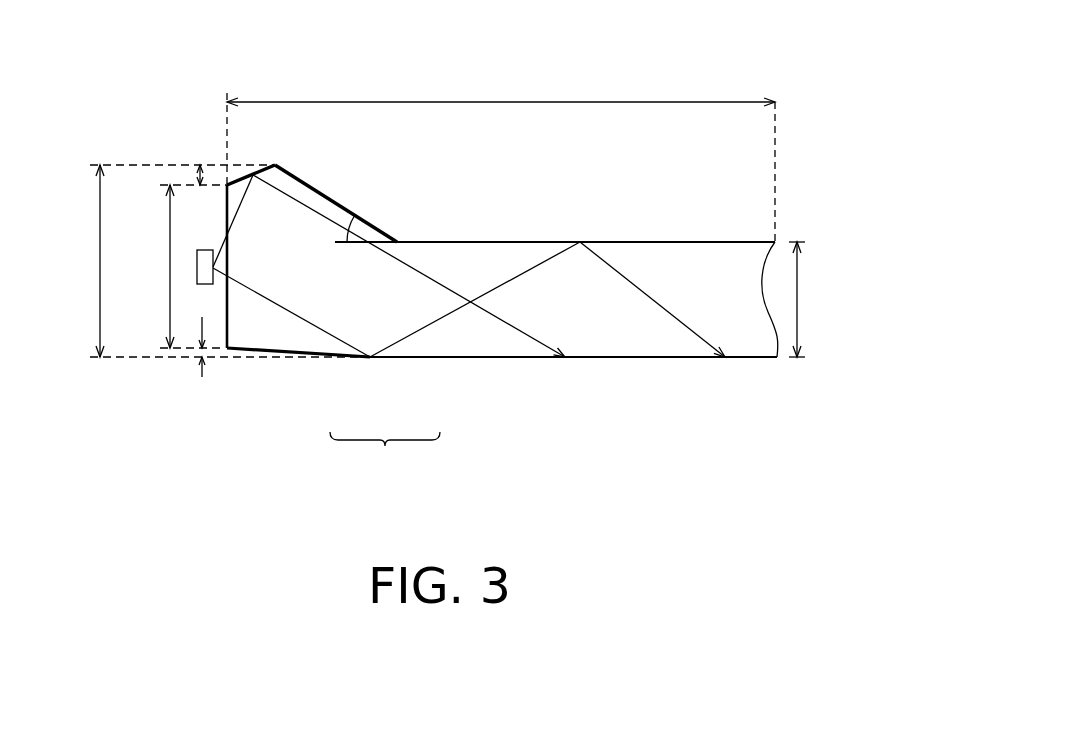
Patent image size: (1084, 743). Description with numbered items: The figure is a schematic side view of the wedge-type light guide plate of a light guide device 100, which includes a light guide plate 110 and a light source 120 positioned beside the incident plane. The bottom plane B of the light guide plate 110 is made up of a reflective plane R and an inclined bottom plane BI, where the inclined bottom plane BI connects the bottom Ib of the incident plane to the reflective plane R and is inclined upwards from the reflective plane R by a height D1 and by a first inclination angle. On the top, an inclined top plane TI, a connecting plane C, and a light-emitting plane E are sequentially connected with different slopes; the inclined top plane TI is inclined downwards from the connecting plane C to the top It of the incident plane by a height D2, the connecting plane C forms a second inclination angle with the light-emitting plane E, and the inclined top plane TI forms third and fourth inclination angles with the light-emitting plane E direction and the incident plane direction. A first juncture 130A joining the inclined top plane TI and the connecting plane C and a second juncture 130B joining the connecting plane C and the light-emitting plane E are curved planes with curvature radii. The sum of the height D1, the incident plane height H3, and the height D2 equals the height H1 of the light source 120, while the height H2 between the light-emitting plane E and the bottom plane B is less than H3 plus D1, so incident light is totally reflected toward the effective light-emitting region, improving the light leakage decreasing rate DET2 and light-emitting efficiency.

The light guide device 100 is at (808, 443).
The light guide plate 110 is at (740, 306).
The light source 120 is at (201, 284).
The first juncture 130A is at (276, 165).
The second juncture 130B is at (398, 240).
The light-emitting plane E is at (635, 242).
The connecting plane C is at (334, 200).
The inclined top plane TI is at (252, 173).
The top of the incident plane It is at (226, 187).
The bottom of the incident plane Ib is at (225, 348).
The height of the light source H1 is at (84, 261).
The height between the light-emitting plane and the bottom plane H2 is at (848, 299).
The height of the incident plane H3 is at (153, 266).
The light leakage decreasing rate DET2 is at (501, 151).
The height by which the inclined bottom plane is inclined upwards D1 is at (202, 378).
The height by which the inclined top plane is inclined downwards D2 is at (197, 175).
The inclined bottom plane BI is at (303, 357).
The reflective plane R is at (528, 357).
The bottom plane B is at (385, 458).